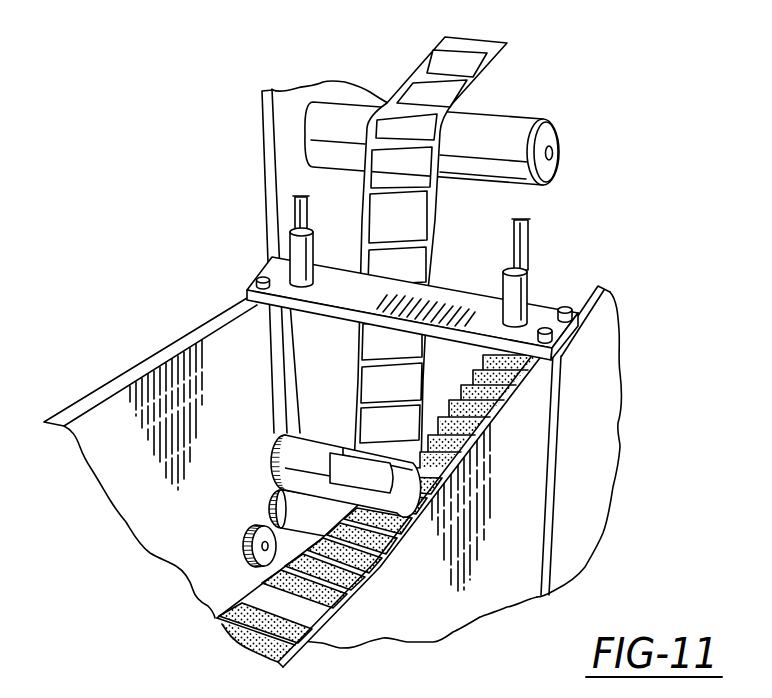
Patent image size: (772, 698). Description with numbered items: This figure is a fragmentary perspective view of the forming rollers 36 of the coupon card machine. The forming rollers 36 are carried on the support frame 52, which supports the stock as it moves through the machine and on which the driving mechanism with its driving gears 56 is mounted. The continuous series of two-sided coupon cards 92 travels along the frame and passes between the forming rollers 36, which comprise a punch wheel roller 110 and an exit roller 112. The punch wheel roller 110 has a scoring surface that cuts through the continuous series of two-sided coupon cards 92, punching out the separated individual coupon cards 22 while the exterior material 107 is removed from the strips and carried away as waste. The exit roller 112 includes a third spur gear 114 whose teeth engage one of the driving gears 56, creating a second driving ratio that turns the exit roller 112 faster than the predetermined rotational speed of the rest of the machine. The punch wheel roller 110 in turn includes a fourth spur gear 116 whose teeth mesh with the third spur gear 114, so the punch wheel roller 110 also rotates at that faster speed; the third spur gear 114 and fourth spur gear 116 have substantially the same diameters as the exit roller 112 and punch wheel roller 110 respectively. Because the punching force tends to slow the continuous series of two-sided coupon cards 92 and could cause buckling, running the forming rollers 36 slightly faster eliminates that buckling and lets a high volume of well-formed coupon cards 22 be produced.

The individual coupon cards 22 is at (474, 389).
The forming rollers 36 is at (341, 521).
The support frame 52 is at (385, 629).
The driving gears 56 is at (193, 577).
The continuous series of two-sided coupon cards 92 is at (280, 650).
The exterior material 107 is at (437, 211).
The punch wheel roller 110 is at (400, 485).
The exit roller 112 is at (262, 516).
The third spur gear 114 is at (270, 503).
The fourth spur gear 116 is at (273, 452).